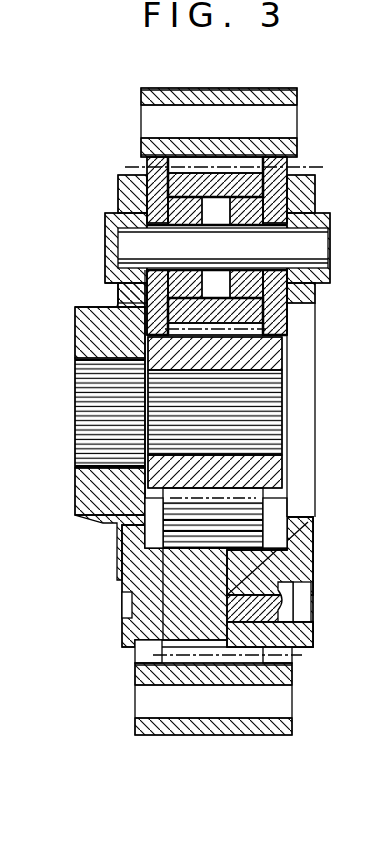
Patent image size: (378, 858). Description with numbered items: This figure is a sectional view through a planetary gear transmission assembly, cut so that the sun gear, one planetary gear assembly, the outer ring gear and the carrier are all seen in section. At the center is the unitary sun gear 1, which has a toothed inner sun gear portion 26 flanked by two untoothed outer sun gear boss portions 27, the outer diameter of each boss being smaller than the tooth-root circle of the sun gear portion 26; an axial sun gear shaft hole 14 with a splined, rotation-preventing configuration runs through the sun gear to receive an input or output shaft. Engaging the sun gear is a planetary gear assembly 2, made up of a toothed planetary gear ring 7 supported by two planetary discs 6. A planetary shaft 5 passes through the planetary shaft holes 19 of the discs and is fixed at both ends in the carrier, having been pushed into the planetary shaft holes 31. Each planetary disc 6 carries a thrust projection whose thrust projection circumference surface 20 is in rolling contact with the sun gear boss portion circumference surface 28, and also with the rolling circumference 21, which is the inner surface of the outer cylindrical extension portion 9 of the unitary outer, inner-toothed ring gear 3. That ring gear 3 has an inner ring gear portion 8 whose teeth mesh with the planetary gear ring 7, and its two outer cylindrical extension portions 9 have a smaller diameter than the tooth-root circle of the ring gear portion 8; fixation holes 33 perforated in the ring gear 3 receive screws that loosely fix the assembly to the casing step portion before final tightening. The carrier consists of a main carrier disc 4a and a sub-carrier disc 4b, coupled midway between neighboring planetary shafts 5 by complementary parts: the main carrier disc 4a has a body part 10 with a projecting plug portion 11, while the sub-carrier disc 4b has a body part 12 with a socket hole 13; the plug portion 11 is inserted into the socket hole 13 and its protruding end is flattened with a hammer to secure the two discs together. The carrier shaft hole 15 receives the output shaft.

The unitary sun gear 1 is at (242, 355).
The planetary gear assembly 2 is at (350, 321).
The unitary outer, inner-toothed ring gear 3 is at (262, 93).
The main carrier disc 4a is at (100, 498).
The sub-carrier disc 4b is at (290, 552).
The planetary shaft 5 is at (288, 247).
The planetary disc 6 is at (273, 313).
The planetary gear ring 7 is at (240, 302).
The inner ring gear portion 8 is at (202, 167).
The outer cylindrical extension portion 9 is at (280, 143).
The body part 10 is at (183, 563).
The plug portion 11 is at (255, 603).
The body part 12 is at (253, 570).
The socket hole 13 is at (257, 622).
The sun gear shaft hole 14 is at (248, 453).
The carrier shaft hole 15 is at (110, 352).
The planetary shaft hole 19 is at (252, 222).
The thrust projection circumference surface 20 is at (135, 180).
The rolling circumference 21 is at (140, 163).
The inner sun gear portion 26 is at (268, 487).
The outer sun gear boss portion 27 is at (203, 495).
The sun gear boss portion circumference surface 28 is at (270, 493).
The planetary shaft hole 31 is at (118, 250).
The fixation hole 33 is at (272, 115).